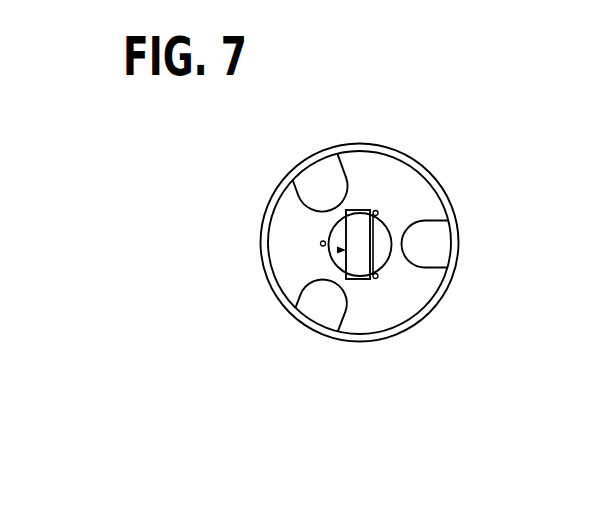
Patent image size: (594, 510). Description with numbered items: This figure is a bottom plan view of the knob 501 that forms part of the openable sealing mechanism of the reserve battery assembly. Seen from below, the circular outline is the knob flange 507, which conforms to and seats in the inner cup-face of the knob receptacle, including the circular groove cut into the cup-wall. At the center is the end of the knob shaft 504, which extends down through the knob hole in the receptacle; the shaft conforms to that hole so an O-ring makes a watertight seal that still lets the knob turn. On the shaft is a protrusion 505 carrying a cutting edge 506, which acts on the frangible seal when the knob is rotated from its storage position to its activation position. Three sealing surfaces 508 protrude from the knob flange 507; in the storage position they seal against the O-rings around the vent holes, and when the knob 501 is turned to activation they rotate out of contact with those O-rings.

The knob 501 is at (403, 293).
The knob shaft 504 is at (383, 242).
The protrusion 505 is at (357, 231).
The cutting edge 506 is at (338, 250).
The knob flange 507 is at (375, 314).
The sealing surfaces 508 is at (317, 183).